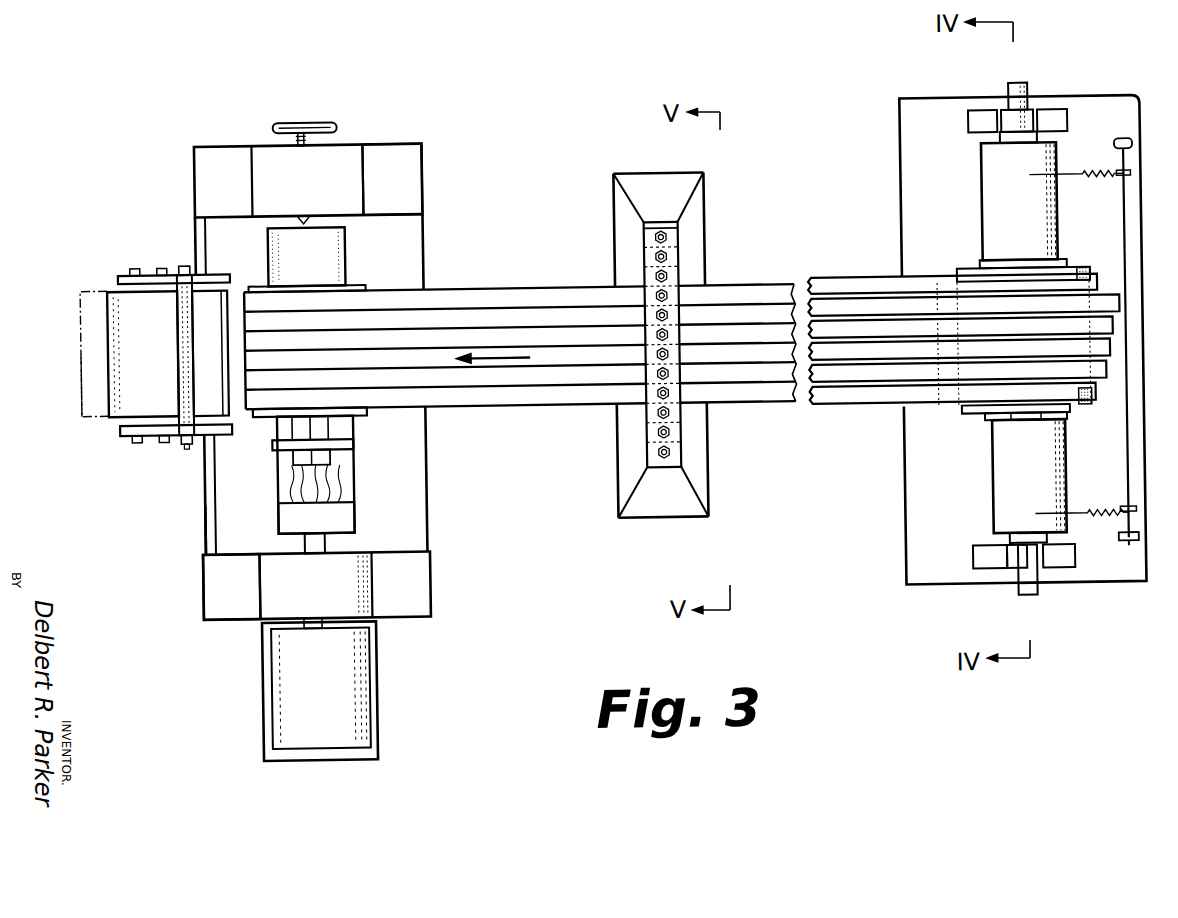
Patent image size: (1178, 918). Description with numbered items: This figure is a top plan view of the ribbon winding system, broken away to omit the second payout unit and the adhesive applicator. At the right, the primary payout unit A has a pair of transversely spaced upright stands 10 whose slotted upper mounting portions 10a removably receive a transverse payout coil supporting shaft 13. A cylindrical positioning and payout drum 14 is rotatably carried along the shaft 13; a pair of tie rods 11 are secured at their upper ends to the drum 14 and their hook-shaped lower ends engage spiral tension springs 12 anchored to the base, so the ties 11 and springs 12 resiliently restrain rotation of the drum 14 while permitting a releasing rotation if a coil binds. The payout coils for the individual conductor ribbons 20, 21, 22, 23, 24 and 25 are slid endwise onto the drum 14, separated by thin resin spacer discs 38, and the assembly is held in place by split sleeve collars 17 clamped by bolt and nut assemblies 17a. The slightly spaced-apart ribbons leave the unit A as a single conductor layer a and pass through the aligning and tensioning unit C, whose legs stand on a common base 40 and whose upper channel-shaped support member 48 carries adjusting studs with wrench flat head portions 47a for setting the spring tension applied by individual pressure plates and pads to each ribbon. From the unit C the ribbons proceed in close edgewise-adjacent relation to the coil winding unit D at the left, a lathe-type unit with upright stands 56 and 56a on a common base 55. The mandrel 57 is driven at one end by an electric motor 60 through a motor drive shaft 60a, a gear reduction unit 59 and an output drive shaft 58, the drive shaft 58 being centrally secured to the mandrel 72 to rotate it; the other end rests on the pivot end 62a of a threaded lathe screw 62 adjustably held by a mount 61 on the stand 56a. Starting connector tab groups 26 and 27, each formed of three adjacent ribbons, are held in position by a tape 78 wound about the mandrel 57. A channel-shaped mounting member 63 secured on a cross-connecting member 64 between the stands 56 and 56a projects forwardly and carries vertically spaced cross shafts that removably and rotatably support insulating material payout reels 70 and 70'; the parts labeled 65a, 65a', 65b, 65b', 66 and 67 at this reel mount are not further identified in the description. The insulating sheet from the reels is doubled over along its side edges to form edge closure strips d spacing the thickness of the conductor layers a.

The upright stands 10 is at (971, 128).
The slotted upper mounting portions 10a is at (1008, 119).
The tie rods 11 is at (1075, 179).
The spiral tension spring 12 is at (1107, 194).
The payout coil supporting shaft 13 is at (1014, 601).
The cylindrical positioning and payout drum 14 is at (994, 202).
The split sleeve collars 17 is at (981, 268).
The bolt and nut assemblies 17a is at (1009, 424).
The conductor ribbon 20 is at (1084, 410).
The conductor ribbon 21 is at (1100, 381).
The conductor ribbon 22 is at (1100, 355).
The conductor ribbon 23 is at (1100, 329).
The conductor ribbon 24 is at (1101, 304).
The conductor ribbon 25 is at (1078, 269).
The starting connector tab group 26 is at (351, 454).
The starting connector tab group 27 is at (293, 456).
The spacer discs 38 is at (1108, 298).
The common base 40 is at (699, 204).
The wrench flat head portion 47a is at (668, 236).
The upper support member 48 is at (671, 278).
The common base 55 is at (217, 517).
The upright stand 56 is at (405, 569).
The upright stand 56a is at (426, 166).
The mandrel 57 is at (270, 235).
The output drive shaft 58 is at (300, 543).
The gear reduction unit 59 is at (268, 595).
The electric motor 60 is at (355, 691).
The motor drive shaft 60a is at (368, 619).
The mount 61 is at (351, 153).
The threaded lathe screw 62 is at (300, 134).
The pivot end 62a is at (314, 214).
The mounting member 63 is at (222, 427).
The cross-connecting member 64 is at (201, 491).
The lower bar 65a is at (174, 455).
The lower bar nut 65a' is at (102, 449).
The upper bar 65b is at (173, 244).
The upper bar nut 65b' is at (109, 255).
The shaft 66 is at (176, 422).
The roller 67 is at (177, 341).
The insulating material payout coil 70 is at (73, 354).
The insulating material payout coil 70' is at (64, 387).
The mandrel 72 is at (343, 486).
The tape 78 is at (354, 441).
The conductor layer a is at (533, 289).
The edge closure strip d is at (361, 280).
The primary payout unit A is at (1068, 626).
The aligning and tensioning unit C is at (592, 494).
The coil winding unit D is at (326, 795).